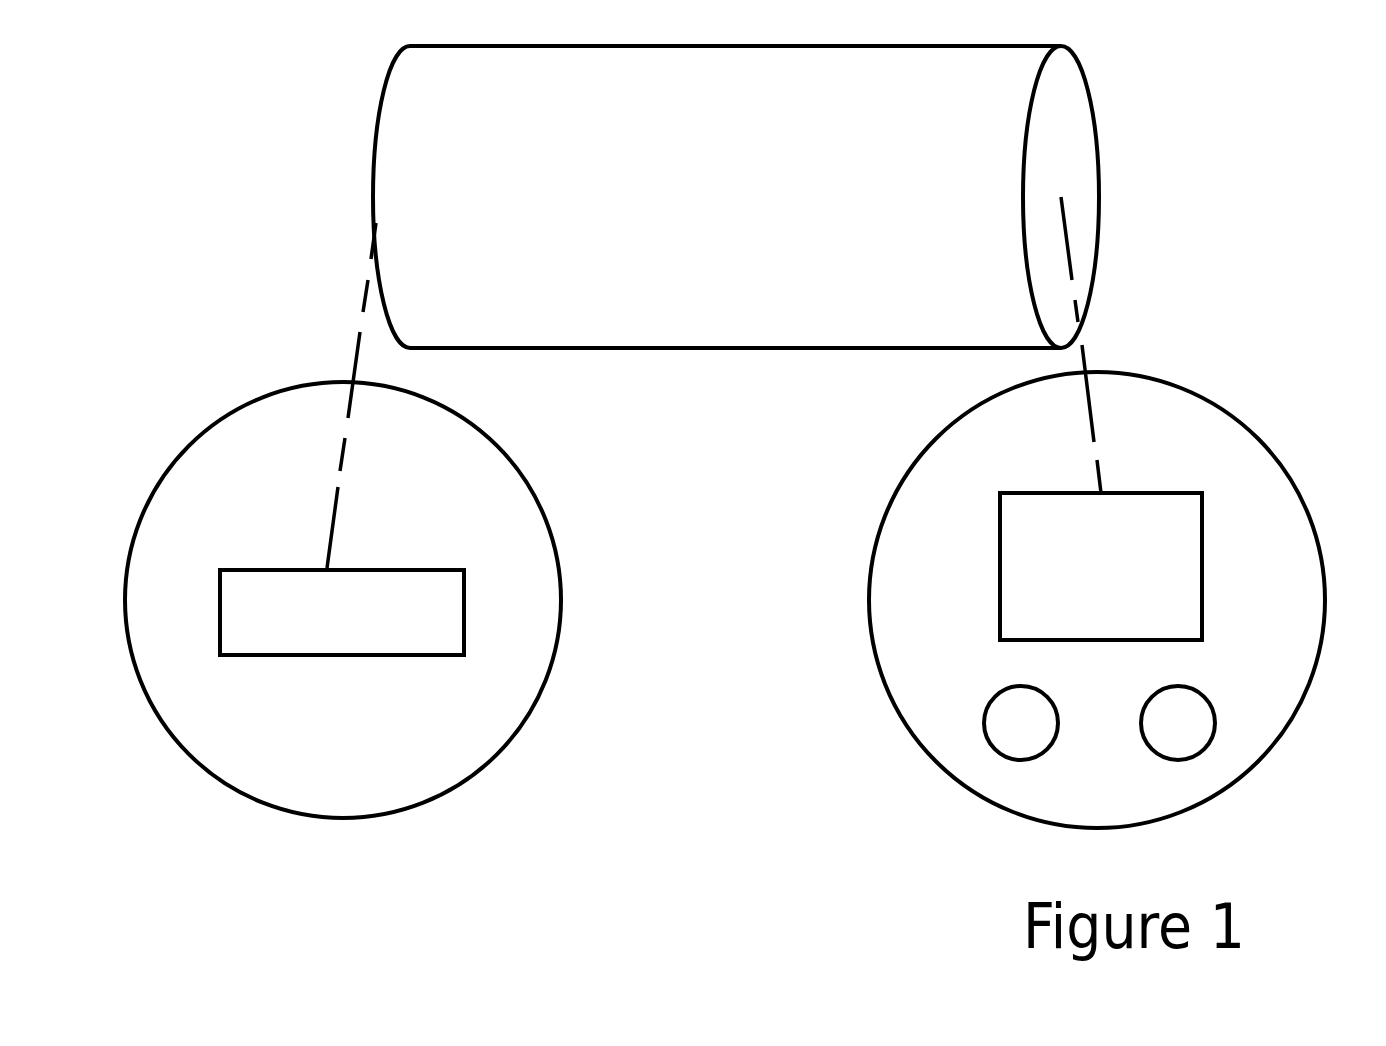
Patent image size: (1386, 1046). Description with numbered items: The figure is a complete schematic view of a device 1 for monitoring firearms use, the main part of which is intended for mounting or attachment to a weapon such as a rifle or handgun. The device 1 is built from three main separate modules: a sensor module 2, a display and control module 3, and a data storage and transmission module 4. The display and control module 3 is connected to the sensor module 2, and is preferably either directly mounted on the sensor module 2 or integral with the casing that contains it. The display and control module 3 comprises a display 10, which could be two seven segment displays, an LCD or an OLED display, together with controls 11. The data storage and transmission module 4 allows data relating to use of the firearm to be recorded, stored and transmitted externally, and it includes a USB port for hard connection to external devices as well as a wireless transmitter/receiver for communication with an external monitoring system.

The device 1 is at (1093, 100).
The sensor module 2 is at (382, 123).
The display and control module 3 is at (1178, 394).
The data storage and transmission module 4 is at (525, 478).
The display 10 is at (1204, 508).
The controls 11 is at (988, 735).